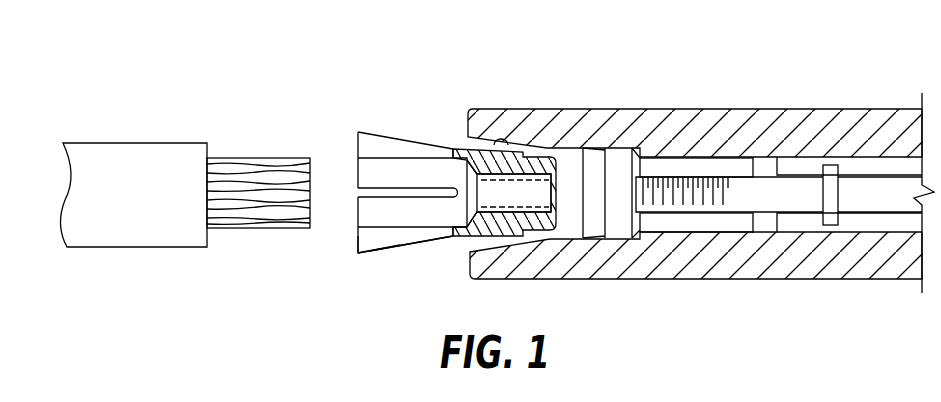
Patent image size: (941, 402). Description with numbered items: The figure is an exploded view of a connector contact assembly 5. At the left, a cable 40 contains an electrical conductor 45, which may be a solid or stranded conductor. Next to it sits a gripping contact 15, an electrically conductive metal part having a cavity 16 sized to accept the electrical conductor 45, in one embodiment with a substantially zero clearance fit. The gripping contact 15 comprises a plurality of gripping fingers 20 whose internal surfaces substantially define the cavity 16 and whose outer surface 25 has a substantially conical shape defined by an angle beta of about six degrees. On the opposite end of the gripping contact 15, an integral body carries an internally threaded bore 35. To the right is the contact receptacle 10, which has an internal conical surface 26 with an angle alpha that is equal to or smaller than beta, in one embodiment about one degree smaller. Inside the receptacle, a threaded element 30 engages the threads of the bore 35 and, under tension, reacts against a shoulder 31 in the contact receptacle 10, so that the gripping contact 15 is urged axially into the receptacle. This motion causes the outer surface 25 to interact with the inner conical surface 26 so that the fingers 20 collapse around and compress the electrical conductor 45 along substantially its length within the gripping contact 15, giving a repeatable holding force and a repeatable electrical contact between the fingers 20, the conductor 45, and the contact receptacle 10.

The connector contact assembly 5 is at (701, 148).
The contact receptacle 10 is at (645, 109).
The gripping contact 15 is at (438, 209).
The cavity 16 is at (370, 185).
The gripping fingers 20 is at (360, 240).
The outer surface 25 is at (390, 253).
The internal conical surface 26 is at (502, 138).
The threaded element 30 is at (842, 183).
The shoulder 31 is at (775, 174).
The internally threaded bore 35 is at (527, 212).
The cable 40 is at (152, 143).
The electrical conductor 45 is at (258, 158).